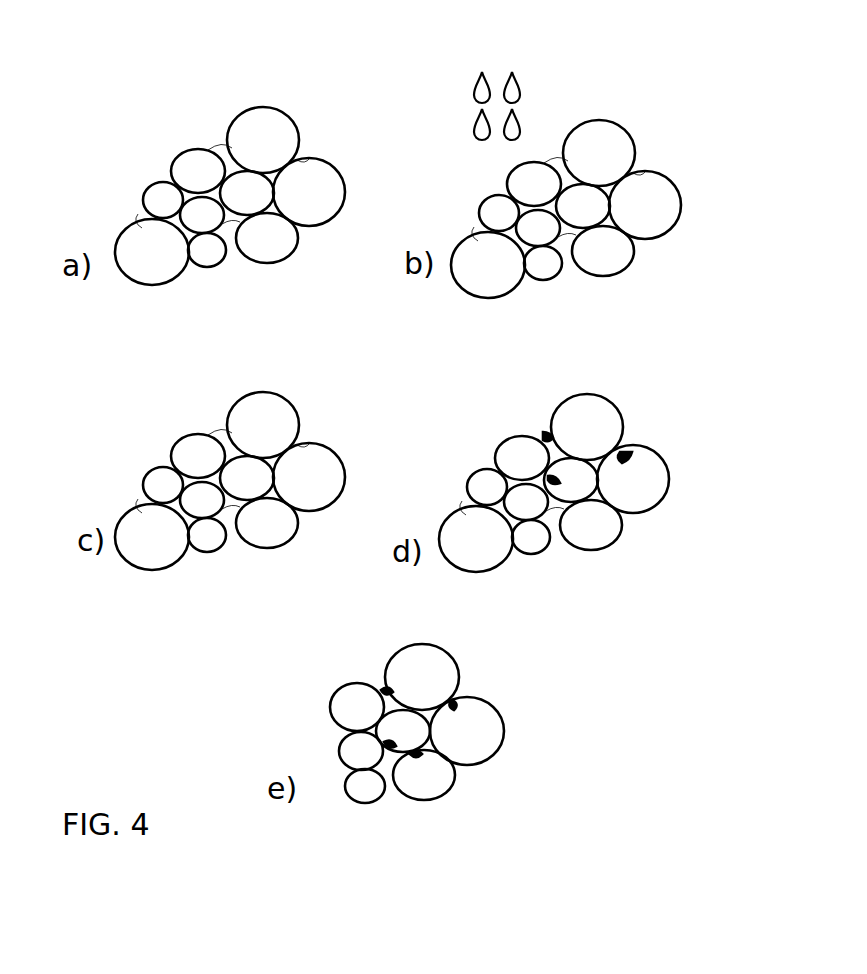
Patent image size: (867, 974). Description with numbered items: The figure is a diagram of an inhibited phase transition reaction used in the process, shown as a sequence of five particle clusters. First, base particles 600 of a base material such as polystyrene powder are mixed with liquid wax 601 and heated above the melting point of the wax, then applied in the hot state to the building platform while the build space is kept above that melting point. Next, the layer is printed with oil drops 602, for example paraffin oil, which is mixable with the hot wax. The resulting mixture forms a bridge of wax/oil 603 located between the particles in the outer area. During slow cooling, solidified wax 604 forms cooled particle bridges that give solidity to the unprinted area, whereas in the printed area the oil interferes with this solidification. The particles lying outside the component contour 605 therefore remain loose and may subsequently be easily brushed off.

The base particles 600 is at (237, 132).
The liquid wax 601 is at (159, 172).
The oil drops 602 is at (464, 124).
The bridge of wax/oil 603 is at (158, 452).
The solidified wax 604 is at (537, 431).
The component contour 605 is at (325, 744).